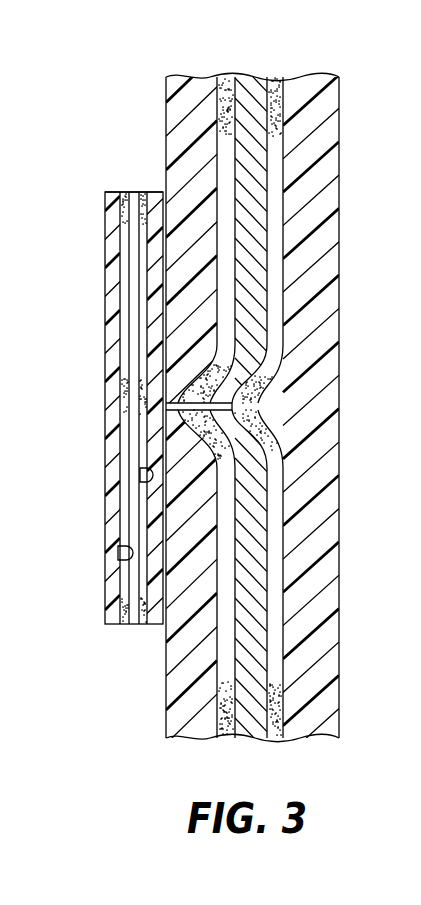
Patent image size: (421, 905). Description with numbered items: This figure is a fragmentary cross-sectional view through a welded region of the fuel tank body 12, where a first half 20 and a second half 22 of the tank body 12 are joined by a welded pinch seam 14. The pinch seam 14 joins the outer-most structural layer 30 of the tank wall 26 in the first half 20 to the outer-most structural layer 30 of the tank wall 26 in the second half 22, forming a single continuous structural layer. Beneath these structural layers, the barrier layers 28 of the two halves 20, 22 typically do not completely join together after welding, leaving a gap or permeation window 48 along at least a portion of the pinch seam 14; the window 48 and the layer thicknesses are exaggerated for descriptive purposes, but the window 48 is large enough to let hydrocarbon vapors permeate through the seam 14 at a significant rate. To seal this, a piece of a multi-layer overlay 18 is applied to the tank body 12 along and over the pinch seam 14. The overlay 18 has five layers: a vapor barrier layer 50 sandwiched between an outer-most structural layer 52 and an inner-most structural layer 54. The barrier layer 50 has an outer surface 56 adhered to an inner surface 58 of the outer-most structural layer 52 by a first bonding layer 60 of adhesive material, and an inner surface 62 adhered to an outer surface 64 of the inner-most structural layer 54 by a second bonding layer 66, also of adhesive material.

The fuel tank body 12 is at (358, 663).
The pinch seam 14 is at (166, 405).
The multi-layer overlay 18 is at (86, 264).
The first half 20 is at (340, 130).
The second half 22 is at (358, 502).
The tank wall 26 is at (166, 110).
The barrier layer 28 is at (247, 78).
The outer-most structural layer 30 is at (187, 78).
The permeation window 48 is at (232, 405).
The vapor barrier layer 50 is at (130, 196).
The outer-most structural layer 52 is at (113, 191).
The inner-most structural layer 54 is at (155, 196).
The outer surface 56 is at (129, 522).
The inner surface 58 is at (118, 553).
The first bonding layer 60 is at (127, 625).
The inner surface 62 is at (140, 478).
The outer surface 64 is at (147, 458).
The second bonding layer 66 is at (143, 625).